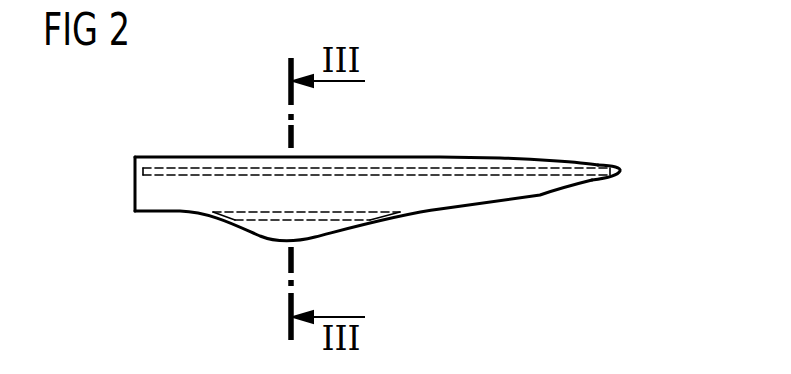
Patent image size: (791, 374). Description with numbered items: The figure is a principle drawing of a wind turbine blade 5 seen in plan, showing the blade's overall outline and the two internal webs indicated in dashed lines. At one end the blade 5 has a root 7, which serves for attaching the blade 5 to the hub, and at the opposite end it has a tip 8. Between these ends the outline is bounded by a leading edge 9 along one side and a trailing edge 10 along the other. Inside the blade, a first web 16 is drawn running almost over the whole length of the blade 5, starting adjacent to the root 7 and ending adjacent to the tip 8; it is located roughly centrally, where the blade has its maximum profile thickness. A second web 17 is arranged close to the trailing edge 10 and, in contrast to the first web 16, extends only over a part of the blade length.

The turbine blade 5 is at (377, 183).
The root 7 is at (135, 185).
The tip 8 is at (623, 170).
The leading edge 9 is at (192, 157).
The trailing edge 10 is at (487, 205).
The first web 16 is at (460, 158).
The second web 17 is at (262, 225).